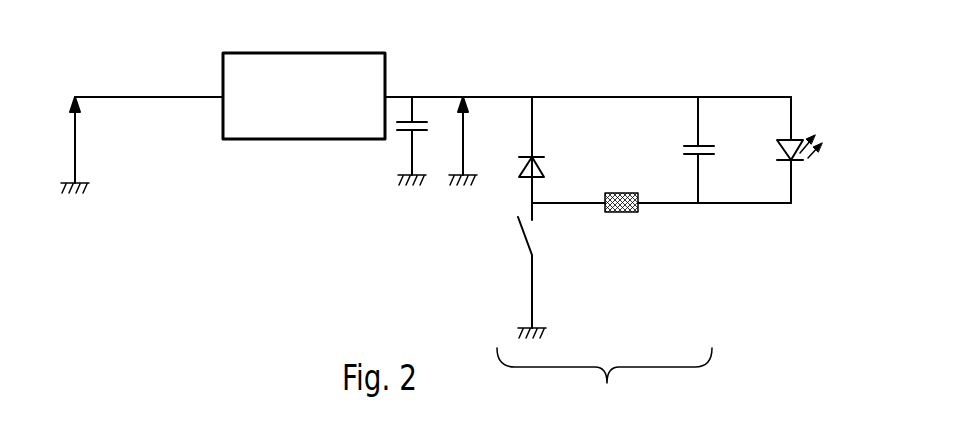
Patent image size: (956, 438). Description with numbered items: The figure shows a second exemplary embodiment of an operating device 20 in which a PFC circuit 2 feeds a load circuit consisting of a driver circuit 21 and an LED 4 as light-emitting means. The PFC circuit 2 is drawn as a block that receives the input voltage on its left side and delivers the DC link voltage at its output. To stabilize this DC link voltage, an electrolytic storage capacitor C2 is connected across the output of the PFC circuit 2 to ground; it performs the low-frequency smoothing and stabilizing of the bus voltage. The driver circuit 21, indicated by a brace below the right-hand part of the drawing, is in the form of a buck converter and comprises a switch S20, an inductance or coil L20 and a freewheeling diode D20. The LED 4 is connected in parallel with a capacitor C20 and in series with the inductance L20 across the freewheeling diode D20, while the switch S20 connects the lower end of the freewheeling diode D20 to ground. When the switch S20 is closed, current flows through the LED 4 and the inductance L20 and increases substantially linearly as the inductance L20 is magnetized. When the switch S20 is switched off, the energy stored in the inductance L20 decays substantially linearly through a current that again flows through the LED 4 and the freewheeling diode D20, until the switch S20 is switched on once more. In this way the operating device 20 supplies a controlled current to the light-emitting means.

The PFC circuit 2 is at (300, 140).
The LED 4 is at (803, 160).
The operating device 20 is at (437, 236).
The driver circuit 21 is at (604, 383).
The electrolytic storage capacitor C2 is at (419, 141).
The freewheeling diode D20 is at (552, 150).
The inductance L20 is at (621, 218).
The output capacitor C20 is at (680, 150).
The switch S20 is at (514, 270).